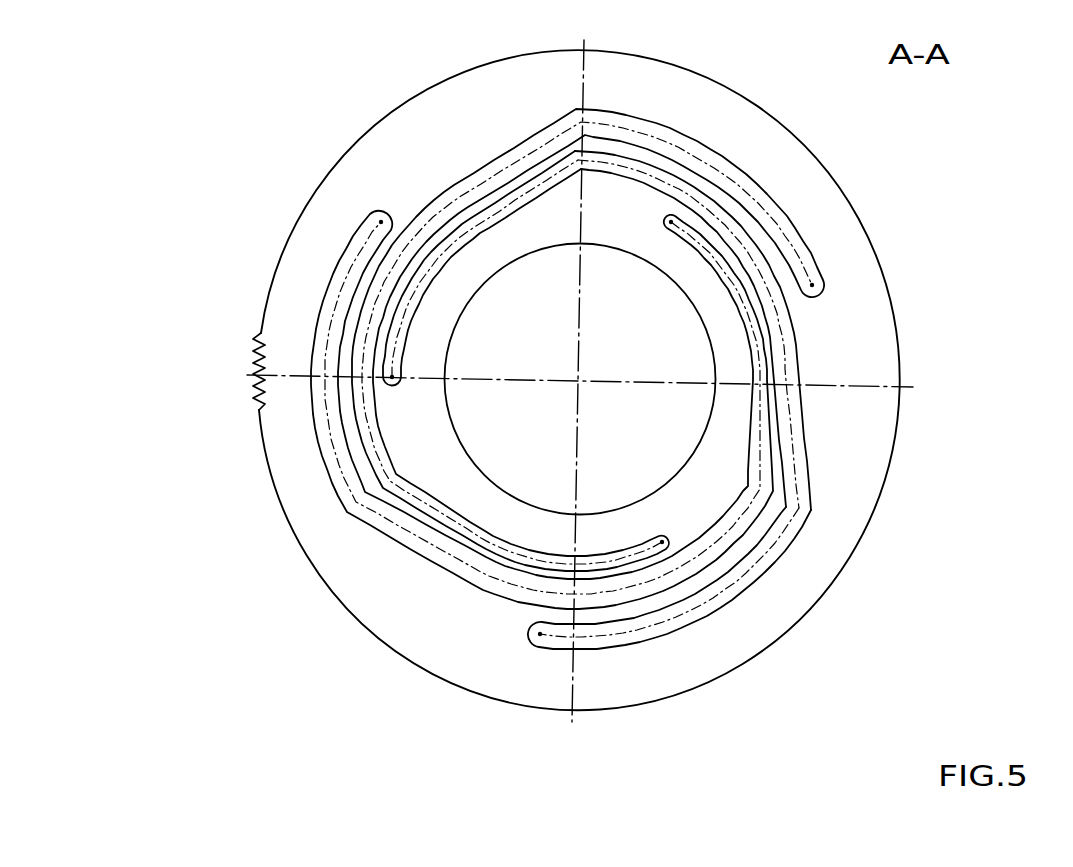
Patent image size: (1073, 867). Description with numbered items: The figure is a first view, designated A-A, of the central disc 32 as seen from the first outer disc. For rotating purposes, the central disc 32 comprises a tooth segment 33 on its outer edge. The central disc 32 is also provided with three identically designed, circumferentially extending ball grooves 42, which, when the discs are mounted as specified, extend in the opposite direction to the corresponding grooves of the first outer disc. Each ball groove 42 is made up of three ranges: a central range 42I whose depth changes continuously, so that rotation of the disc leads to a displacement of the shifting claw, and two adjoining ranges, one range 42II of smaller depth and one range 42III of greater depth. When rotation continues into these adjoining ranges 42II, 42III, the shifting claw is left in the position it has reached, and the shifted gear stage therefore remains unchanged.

The central disc 32 is at (897, 318).
The tooth segment 33 is at (259, 402).
The ball groove 42 is at (643, 379).
The central range 42I is at (800, 417).
The adjoining range of smaller depth 42II is at (716, 602).
The adjoining range of greater depth 42III is at (478, 216).